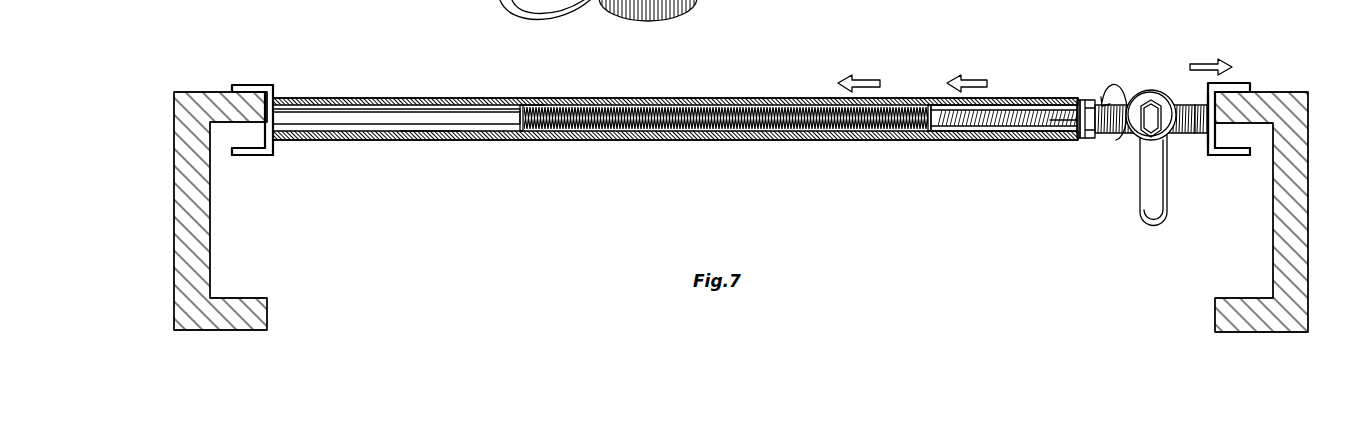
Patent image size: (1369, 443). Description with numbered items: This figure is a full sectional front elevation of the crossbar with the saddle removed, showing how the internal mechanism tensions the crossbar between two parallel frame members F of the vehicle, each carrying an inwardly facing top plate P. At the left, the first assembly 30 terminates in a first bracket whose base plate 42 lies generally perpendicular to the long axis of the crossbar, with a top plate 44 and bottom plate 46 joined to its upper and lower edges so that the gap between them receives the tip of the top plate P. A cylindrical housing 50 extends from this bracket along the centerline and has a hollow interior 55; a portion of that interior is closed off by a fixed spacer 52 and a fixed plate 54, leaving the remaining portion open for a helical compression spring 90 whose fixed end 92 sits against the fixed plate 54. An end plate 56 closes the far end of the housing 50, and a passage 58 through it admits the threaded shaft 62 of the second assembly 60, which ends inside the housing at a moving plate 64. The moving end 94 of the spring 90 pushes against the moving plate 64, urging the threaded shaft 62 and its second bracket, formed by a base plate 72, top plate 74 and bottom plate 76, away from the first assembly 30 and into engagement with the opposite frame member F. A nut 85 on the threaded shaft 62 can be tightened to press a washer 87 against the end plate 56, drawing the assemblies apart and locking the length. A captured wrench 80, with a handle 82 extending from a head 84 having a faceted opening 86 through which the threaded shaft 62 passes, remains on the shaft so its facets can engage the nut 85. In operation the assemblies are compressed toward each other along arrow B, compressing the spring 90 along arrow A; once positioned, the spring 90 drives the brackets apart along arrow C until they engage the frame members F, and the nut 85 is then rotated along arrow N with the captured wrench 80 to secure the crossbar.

The top plate P is at (216, 93).
The frame member F is at (173, 210).
The first assembly 30 is at (278, 142).
The base plate 42 is at (276, 96).
The top plate 44 is at (254, 85).
The bottom plate 46 is at (253, 156).
The housing 50 is at (461, 98).
The fixed spacer 52 is at (381, 112).
The fixed plate 54 is at (524, 140).
The hollow interior 55 is at (428, 140).
The end plate 56 is at (1076, 100).
The passage 58 is at (1062, 120).
The second assembly 60 is at (1206, 136).
The threaded shaft 62 is at (1190, 105).
The moving plate 64 is at (930, 140).
The base plate 72 is at (1216, 128).
The top plate 74 is at (1240, 83).
The bottom plate 76 is at (1238, 156).
The captured wrench 80 is at (1130, 155).
The handle 82 is at (1150, 194).
The head 84 is at (1153, 100).
The nut 85 is at (1088, 139).
The faceted opening 86 is at (1152, 94).
The washer 87 is at (1079, 100).
The spring 90 is at (753, 146).
The fixed end 92 is at (531, 98).
The moving end 94 is at (930, 104).
The arrow N is at (1113, 90).
The arrow A is at (862, 80).
The arrow B is at (972, 80).
The arrow C is at (1208, 60).